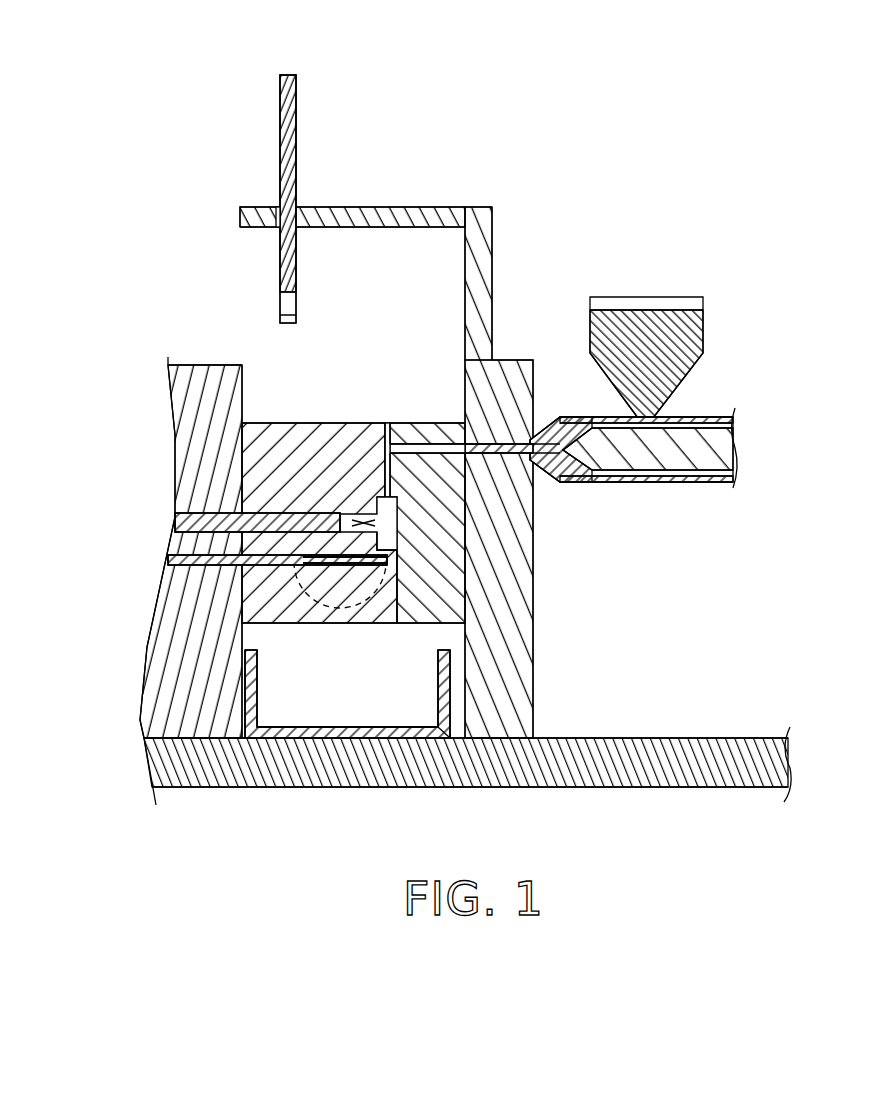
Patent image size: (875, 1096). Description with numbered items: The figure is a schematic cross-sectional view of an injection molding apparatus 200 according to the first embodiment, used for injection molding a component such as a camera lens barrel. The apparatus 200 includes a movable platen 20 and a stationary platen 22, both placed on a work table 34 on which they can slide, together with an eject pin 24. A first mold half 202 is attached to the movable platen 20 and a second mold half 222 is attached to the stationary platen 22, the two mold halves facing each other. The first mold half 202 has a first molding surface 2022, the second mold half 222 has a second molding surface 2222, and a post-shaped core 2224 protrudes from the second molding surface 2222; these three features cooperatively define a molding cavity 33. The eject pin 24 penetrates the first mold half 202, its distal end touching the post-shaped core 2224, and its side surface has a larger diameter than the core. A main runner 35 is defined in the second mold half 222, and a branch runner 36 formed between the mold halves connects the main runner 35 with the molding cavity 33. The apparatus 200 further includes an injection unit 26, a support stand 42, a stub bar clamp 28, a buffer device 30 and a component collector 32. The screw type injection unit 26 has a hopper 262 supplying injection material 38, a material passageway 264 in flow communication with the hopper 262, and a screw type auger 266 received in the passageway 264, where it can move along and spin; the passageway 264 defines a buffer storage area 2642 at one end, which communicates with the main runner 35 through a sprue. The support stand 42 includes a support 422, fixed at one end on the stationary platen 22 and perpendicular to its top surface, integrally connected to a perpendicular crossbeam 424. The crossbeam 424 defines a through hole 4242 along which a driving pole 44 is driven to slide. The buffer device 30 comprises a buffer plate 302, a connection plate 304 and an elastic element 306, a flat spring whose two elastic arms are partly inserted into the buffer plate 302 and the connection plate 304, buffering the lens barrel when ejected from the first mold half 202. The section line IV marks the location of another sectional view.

The injection molding apparatus 200 is at (446, 91).
The movable platen 20 is at (193, 402).
The first mold half 202 is at (253, 595).
The first molding surface 2022 is at (352, 508).
The second molding surface 2222 is at (398, 547).
The post-shaped core 2224 is at (360, 523).
The stationary platen 22 is at (505, 695).
The second mold half 222 is at (445, 600).
The eject pin 24 is at (173, 522).
The injection unit 26 is at (621, 279).
The hopper 262 is at (705, 342).
The material passageway 264 is at (590, 425).
The buffer storage area 2642 is at (538, 442).
The screw type auger 266 is at (700, 480).
The stub bar clamp 28 is at (286, 306).
The buffer device 30 is at (395, 845).
The buffer plate 302 is at (373, 567).
The connection plate 304 is at (268, 567).
The elastic element 306 is at (322, 567).
The component collector 32 is at (437, 740).
The molding cavity 33 is at (455, 485).
The work table 34 is at (748, 750).
The main runner 35 is at (411, 452).
The branch runner 36 is at (387, 493).
The injection material 38 is at (693, 363).
The support stand 42 is at (575, 150).
The support 422 is at (483, 262).
The crossbeam 424 is at (433, 215).
The through hole 4242 is at (279, 212).
The driving pole 44 is at (288, 122).
The section line IV is at (300, 553).